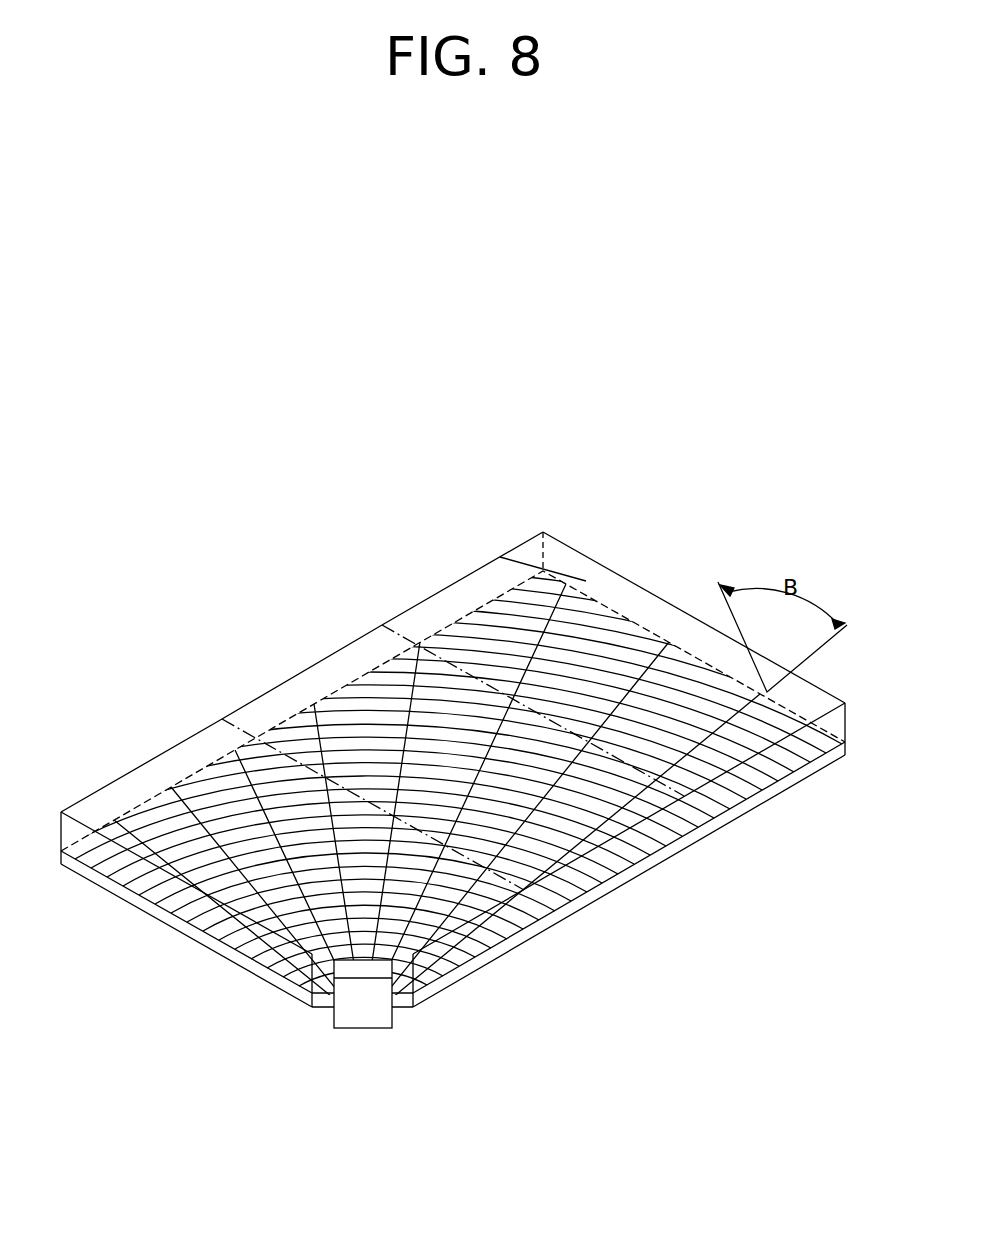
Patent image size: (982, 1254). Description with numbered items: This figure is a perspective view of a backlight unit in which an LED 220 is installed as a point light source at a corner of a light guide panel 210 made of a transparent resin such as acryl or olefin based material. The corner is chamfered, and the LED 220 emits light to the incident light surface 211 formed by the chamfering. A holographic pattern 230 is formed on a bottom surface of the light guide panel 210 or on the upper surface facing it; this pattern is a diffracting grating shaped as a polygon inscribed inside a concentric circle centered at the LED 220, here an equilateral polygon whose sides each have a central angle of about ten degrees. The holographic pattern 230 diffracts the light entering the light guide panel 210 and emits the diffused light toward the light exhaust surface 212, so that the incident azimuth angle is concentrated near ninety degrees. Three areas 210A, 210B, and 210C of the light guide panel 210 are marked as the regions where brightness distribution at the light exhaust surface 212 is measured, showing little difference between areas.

The light guide panel 210 is at (461, 770).
The first area of the light guide panel 210A is at (145, 760).
The second area of the light guide panel 210B is at (303, 667).
The third area of the light guide panel 210C is at (458, 580).
The incident light surface 211 is at (407, 993).
The light exhaust surface 212 is at (527, 550).
The LED 220 is at (367, 1013).
The holographic pattern 230 is at (748, 795).